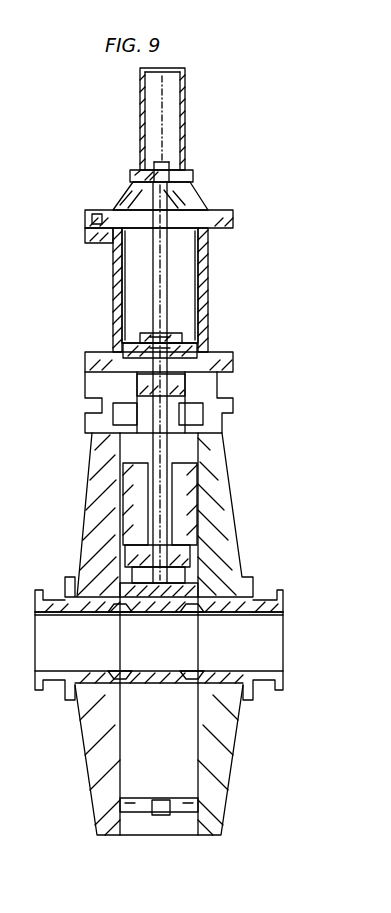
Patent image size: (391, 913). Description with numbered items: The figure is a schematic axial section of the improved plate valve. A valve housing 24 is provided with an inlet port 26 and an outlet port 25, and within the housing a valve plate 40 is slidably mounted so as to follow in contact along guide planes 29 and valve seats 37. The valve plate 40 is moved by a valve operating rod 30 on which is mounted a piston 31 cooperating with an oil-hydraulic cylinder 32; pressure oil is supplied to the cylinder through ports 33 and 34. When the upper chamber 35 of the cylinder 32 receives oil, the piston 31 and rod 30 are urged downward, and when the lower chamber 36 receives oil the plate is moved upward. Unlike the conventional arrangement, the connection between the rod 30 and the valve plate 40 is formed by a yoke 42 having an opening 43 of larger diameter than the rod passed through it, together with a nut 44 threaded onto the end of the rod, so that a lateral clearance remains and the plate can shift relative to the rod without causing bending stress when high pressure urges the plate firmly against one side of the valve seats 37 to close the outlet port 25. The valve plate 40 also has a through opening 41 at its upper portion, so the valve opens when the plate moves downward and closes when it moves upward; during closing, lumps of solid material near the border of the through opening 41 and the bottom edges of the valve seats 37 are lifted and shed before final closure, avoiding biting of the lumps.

The valve housing 24 is at (232, 515).
The outlet port 25 is at (275, 632).
The inlet port 26 is at (40, 656).
The guide planes 29 is at (125, 493).
The valve operating rod 30 is at (170, 486).
The piston 31 is at (195, 347).
The oil-hydraulic cylinder 32 is at (208, 311).
The port 33 is at (100, 232).
The port 34 is at (87, 357).
The upper chamber 35 is at (190, 265).
The lower chamber 36 is at (210, 368).
The valve seats 37 is at (113, 668).
The valve plate 40 is at (188, 722).
The through opening 41 is at (152, 657).
The yoke 42 is at (125, 560).
The opening 43 is at (138, 546).
The nut 44 is at (183, 572).